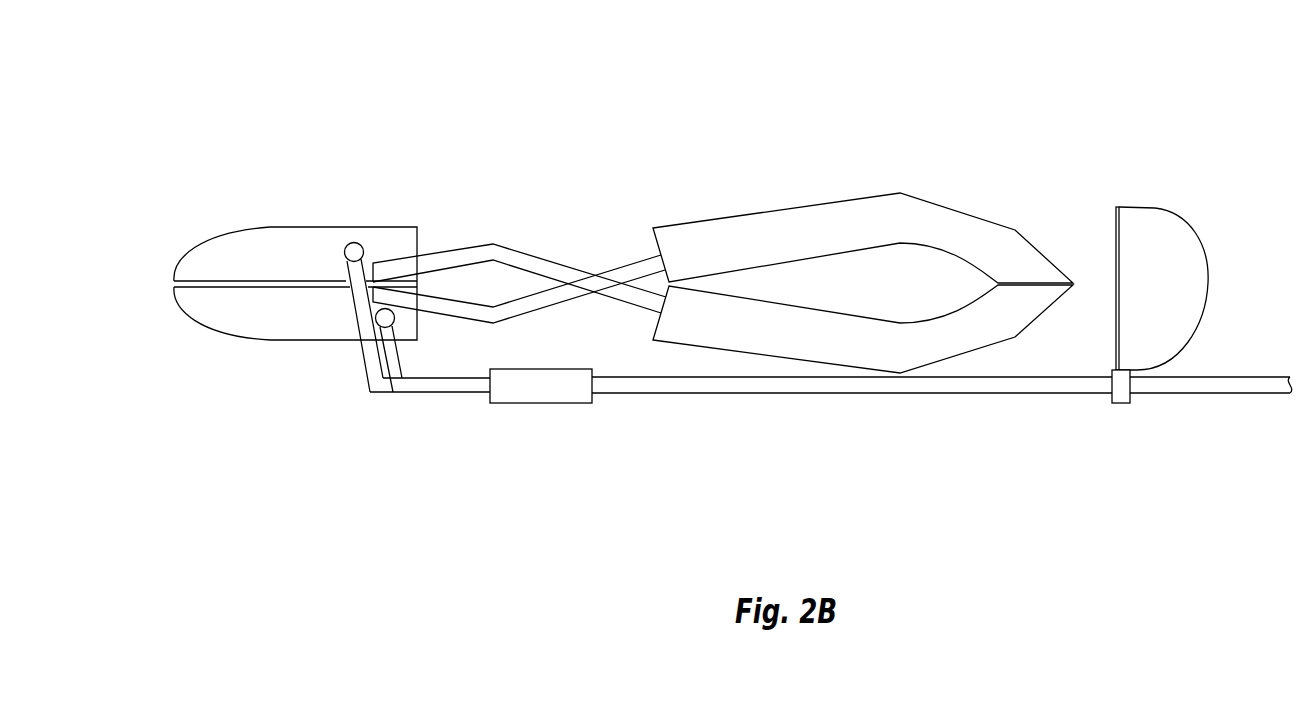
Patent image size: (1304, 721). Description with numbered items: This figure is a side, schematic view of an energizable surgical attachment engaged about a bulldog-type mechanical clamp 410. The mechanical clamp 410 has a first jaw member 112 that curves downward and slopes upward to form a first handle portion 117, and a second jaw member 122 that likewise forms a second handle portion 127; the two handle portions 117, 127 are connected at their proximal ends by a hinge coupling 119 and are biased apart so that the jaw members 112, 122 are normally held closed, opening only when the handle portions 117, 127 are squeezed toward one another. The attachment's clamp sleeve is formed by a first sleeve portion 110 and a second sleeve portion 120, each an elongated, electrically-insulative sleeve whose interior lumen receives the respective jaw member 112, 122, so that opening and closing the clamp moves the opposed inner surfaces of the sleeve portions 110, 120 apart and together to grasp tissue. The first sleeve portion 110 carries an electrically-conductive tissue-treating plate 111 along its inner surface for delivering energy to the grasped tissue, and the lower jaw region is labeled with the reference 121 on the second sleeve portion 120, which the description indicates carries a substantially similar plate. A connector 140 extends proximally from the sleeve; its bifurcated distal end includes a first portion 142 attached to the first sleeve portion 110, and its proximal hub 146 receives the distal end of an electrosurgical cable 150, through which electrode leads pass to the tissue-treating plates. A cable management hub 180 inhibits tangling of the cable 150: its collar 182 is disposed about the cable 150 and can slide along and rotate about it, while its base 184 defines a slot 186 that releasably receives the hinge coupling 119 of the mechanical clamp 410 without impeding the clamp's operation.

The first sleeve portion 110 is at (270, 226).
The second sleeve portion 120 is at (274, 342).
The electrically-conductive tissue-treating plate 111 is at (170, 281).
The lower jaw tip 121 is at (170, 287).
The first jaw member 112 is at (455, 250).
The second jaw member 122 is at (455, 320).
The hinge coupling 119 is at (590, 283).
The second handle portion 127 is at (823, 200).
The first handle portion 117 is at (889, 360).
The mechanical clamp 410 is at (908, 148).
The connector 140 is at (433, 395).
The first portion 142 is at (370, 373).
The proximal hub 146 is at (570, 404).
The electrosurgical cable 150 is at (1005, 396).
The cable management hub 180 is at (1145, 207).
The slot 186 is at (1114, 228).
The base 184 is at (1210, 284).
The collar 182 is at (1119, 404).